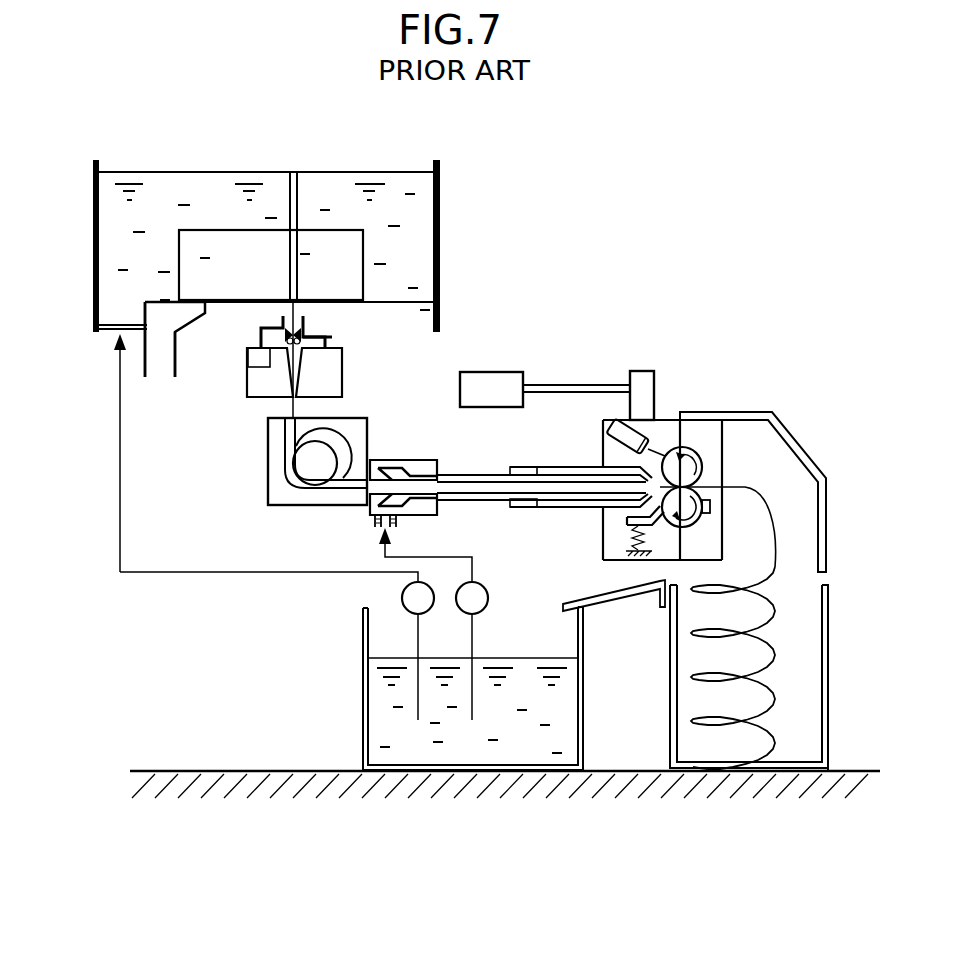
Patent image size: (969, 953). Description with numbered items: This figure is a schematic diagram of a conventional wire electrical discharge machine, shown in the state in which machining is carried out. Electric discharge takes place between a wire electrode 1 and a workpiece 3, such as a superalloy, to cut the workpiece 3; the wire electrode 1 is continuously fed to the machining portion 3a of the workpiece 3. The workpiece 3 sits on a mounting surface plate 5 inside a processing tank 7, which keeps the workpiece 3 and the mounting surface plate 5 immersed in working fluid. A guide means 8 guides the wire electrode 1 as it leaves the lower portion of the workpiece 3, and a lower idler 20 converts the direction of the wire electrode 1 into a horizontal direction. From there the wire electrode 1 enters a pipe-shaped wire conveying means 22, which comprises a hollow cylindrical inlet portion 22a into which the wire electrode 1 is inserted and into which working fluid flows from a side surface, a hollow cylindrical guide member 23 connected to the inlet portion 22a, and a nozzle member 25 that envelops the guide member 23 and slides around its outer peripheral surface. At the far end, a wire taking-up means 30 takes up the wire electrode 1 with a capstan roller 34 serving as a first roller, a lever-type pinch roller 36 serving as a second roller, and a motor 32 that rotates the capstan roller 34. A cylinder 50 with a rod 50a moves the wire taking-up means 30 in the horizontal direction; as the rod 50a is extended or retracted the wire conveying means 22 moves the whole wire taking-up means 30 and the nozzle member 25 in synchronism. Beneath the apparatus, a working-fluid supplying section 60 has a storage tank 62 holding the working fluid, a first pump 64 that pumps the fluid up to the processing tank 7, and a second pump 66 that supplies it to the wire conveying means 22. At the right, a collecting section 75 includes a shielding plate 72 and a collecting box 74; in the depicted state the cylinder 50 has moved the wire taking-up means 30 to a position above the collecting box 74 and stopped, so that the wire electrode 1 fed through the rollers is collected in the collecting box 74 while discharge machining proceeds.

The wire electrode 1 is at (308, 160).
The workpiece 3 is at (364, 241).
The machining portion 3a is at (290, 228).
The mounting surface plate 5 is at (160, 302).
The processing tank 7 is at (442, 178).
The guide means 8 is at (246, 387).
The lower idler 20 is at (300, 462).
The wire conveying means 22 is at (406, 460).
The inlet portion 22a is at (373, 522).
The guide member 23 is at (498, 508).
The nozzle member 25 is at (522, 466).
The wire taking-up means 30 is at (668, 418).
The motor 32 is at (610, 445).
The capstan roller 34 is at (690, 452).
The pinch roller 36 is at (668, 525).
The cylinder 50 is at (492, 371).
The rod 50a is at (570, 384).
The working-fluid supplying section 60 is at (363, 684).
The storage tank 62 is at (363, 738).
The first pump 64 is at (402, 597).
The second pump 66 is at (488, 600).
The shielding plate 72 is at (780, 412).
The collecting box 74 is at (830, 660).
The collecting section 75 is at (826, 495).